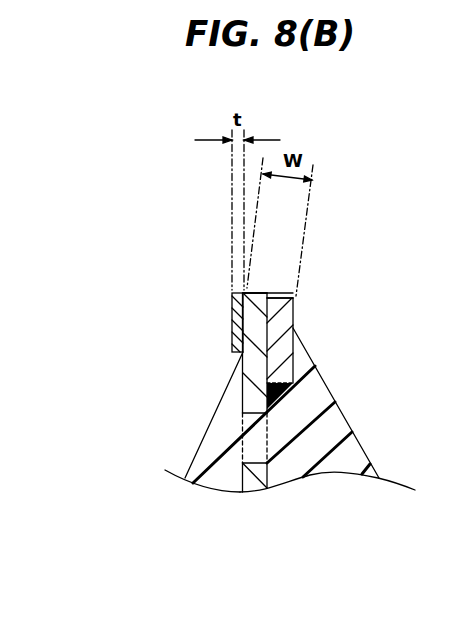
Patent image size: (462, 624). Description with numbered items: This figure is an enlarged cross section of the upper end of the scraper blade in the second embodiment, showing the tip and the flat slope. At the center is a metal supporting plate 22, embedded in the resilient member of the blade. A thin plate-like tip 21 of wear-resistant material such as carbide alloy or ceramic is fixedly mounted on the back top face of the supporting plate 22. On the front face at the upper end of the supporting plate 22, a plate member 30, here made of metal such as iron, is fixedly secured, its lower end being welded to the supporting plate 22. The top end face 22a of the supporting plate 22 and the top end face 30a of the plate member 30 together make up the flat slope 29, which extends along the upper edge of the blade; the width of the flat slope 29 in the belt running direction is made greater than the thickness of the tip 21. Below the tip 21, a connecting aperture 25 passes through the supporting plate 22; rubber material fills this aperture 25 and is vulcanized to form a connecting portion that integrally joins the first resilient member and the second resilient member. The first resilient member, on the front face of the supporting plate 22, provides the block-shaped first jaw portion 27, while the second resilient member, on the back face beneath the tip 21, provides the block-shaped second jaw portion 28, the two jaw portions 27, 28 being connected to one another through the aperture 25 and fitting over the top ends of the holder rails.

The tip 21 is at (231, 313).
The supporting plate 22 is at (241, 383).
The top end face of the supporting plate 22a is at (258, 293).
The top end face of the plate member 30a is at (283, 297).
The flat slope 29 is at (368, 228).
The plate member 30 is at (285, 352).
The first jaw portion 27 is at (350, 418).
The second jaw portion 28 is at (210, 455).
The connecting aperture 25 is at (253, 433).